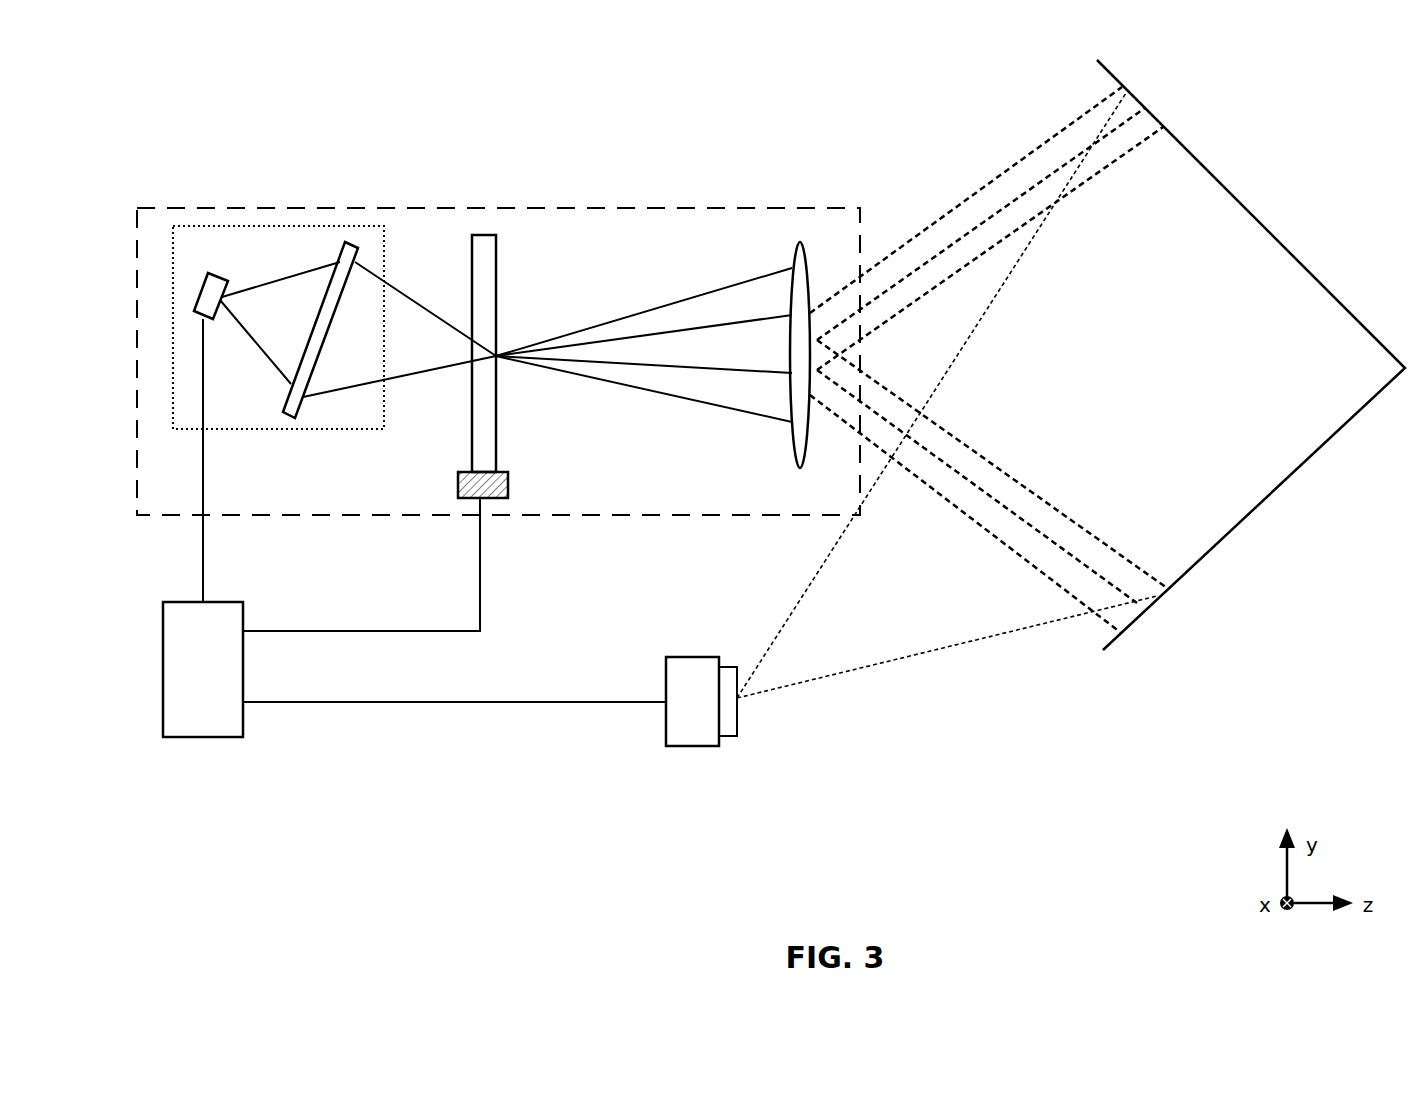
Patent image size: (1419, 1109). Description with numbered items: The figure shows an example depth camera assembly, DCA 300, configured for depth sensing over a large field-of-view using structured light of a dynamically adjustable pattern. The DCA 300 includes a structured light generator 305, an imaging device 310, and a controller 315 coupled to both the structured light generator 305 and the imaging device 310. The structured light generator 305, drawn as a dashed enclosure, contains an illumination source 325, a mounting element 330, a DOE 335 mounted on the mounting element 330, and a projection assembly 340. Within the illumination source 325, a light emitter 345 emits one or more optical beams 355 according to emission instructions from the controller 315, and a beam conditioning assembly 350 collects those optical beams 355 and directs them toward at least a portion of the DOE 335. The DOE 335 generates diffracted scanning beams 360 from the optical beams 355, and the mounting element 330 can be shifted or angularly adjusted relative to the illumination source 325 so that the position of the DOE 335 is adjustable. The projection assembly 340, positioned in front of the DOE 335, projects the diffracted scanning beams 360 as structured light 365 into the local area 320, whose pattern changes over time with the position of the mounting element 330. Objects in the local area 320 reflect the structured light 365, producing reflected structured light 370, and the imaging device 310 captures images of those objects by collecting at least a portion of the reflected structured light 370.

The depth camera assembly (DCA) 300 is at (1285, 78).
The structured light generator 305 is at (665, 197).
The imaging device 310 is at (727, 720).
The controller 315 is at (208, 737).
The local area 320 is at (1265, 475).
The illumination source 325 is at (348, 226).
The mounting element 330 is at (495, 498).
The diffractive optical element (DOE) 335 is at (495, 233).
The projection assembly 340 is at (807, 263).
The light emitter 345 is at (216, 272).
The beam conditioning assembly 350 is at (303, 405).
The optical beams 355 is at (275, 280).
The diffracted scanning beams 360 is at (703, 367).
The structured light 365 is at (975, 197).
The reflected structured light 370 is at (983, 642).